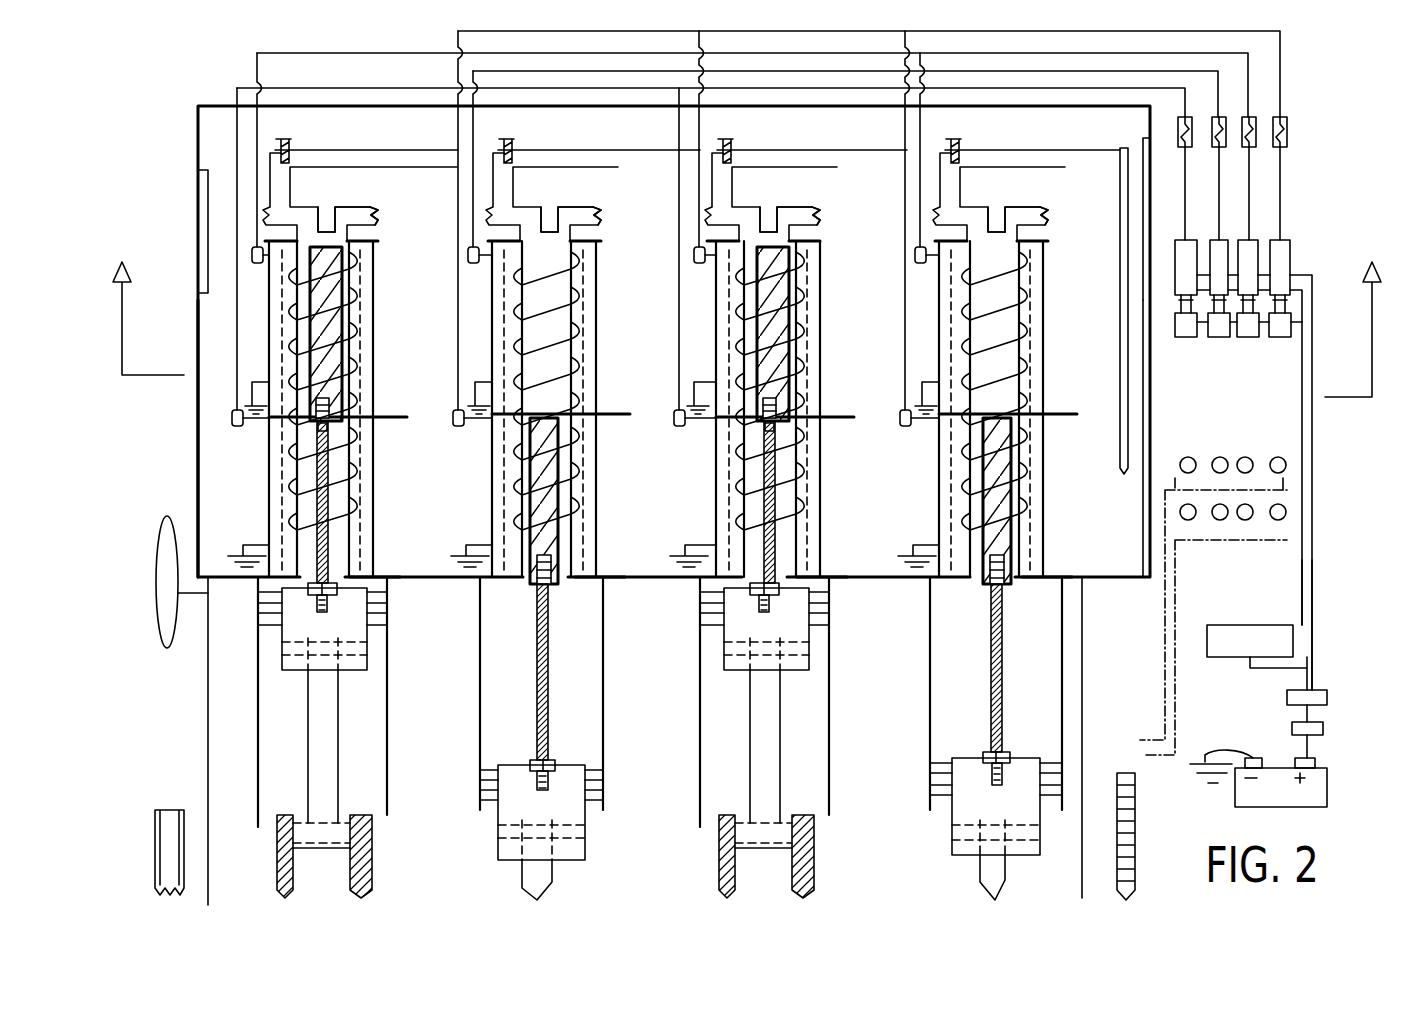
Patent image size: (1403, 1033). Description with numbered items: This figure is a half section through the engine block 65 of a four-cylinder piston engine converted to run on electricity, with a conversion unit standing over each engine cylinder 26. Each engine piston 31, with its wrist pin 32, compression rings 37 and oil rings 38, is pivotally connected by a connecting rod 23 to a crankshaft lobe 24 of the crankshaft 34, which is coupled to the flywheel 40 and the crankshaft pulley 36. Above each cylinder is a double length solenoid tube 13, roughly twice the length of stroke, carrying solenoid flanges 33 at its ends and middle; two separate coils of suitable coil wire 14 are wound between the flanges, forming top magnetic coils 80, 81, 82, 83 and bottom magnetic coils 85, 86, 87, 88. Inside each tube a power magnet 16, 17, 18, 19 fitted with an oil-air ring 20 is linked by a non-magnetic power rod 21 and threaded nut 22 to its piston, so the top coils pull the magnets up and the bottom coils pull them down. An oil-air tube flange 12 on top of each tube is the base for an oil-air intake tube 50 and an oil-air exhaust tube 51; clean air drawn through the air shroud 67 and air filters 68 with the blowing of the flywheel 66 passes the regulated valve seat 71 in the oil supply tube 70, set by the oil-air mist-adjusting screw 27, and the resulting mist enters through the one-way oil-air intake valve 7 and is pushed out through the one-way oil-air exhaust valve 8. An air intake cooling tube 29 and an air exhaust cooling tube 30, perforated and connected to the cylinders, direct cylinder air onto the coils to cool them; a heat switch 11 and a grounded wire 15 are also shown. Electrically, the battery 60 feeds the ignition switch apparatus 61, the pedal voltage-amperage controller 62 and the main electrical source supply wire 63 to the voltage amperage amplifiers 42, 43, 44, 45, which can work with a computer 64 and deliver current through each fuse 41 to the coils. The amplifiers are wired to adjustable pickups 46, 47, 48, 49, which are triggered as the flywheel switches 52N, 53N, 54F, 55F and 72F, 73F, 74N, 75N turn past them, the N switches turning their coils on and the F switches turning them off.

The one-way oil-air intake valve 7 is at (317, 237).
The one-way oil-air exhaust valve 8 is at (340, 228).
The heat switch 11 is at (254, 264).
The oil-air tube flange 12 is at (385, 214).
The double length solenoid tube 13 is at (352, 440).
The suitable coil wire 14 is at (296, 350).
The grounded wire 15 is at (250, 393).
The power magnet 16 is at (343, 318).
The power magnet 17 is at (563, 482).
The power magnet 18 is at (803, 313).
The power magnet 19 is at (1037, 458).
The oil-air ring 20 is at (346, 250).
The power rod 21 is at (317, 497).
The threaded nut 22 is at (308, 588).
The connecting rod 23 is at (314, 733).
The crankshaft lobe 24 is at (280, 860).
The engine cylinder 26 is at (257, 795).
The oil-air mist-adjusting screw 27 is at (291, 138).
The air intake cooling tube 29 is at (269, 322).
The air exhaust cooling tube 30 is at (373, 468).
The engine piston 31 is at (293, 655).
The wrist pin 32 is at (350, 652).
The solenoid flange 33 is at (378, 240).
The crankshaft 34 is at (337, 832).
The crankshaft pulley 36 is at (172, 810).
The engine piston compression ring 37 is at (391, 592).
The engine piston oil ring 38 is at (275, 612).
The flywheel 40 is at (1138, 797).
The fuse 41 is at (1180, 132).
The voltage amperage amplifier 42 is at (1190, 245).
The voltage amperage amplifier 43 is at (1222, 245).
The voltage amperage amplifier 44 is at (1250, 245).
The voltage amperage amplifier 45 is at (1282, 265).
The adjustable pickup 46 is at (1186, 325).
The adjustable pickup 47 is at (1219, 330).
The adjustable pickup 48 is at (1250, 328).
The adjustable pickup 49 is at (1290, 320).
The oil-air intake tube 50 is at (268, 200).
The oil-air exhaust tube 51 is at (383, 210).
The flywheel switch 52N is at (1188, 457).
The flywheel switch 53N is at (1220, 457).
The flywheel switch 54F is at (1250, 465).
The flywheel switch 55F is at (1282, 470).
The battery 60 is at (1290, 790).
The ignition switch apparatus 61 is at (1318, 728).
The pedal voltage-amperage controller 62 is at (1312, 695).
The main electrical source supply wire 63 is at (1314, 597).
The computer 64 is at (1270, 645).
The engine block 65 is at (208, 718).
The flywheel 66 is at (170, 516).
The air shroud 67 is at (198, 418).
The air filters 68 is at (200, 248).
The oil supply tube 70 is at (1123, 303).
The regulated valve seat 71 is at (276, 172).
The flywheel switch 72F is at (1188, 520).
The flywheel switch 73F is at (1222, 520).
The flywheel switch 74N is at (1250, 520).
The flywheel switch 75N is at (1288, 510).
The top magnetic coil 80 is at (345, 347).
The top magnetic coil 81 is at (560, 278).
The top magnetic coil 82 is at (733, 307).
The top magnetic coil 83 is at (1008, 250).
The bottom magnetic coil 85 is at (346, 528).
The bottom magnetic coil 86 is at (563, 500).
The bottom magnetic coil 87 is at (807, 503).
The bottom magnetic coil 88 is at (1037, 513).